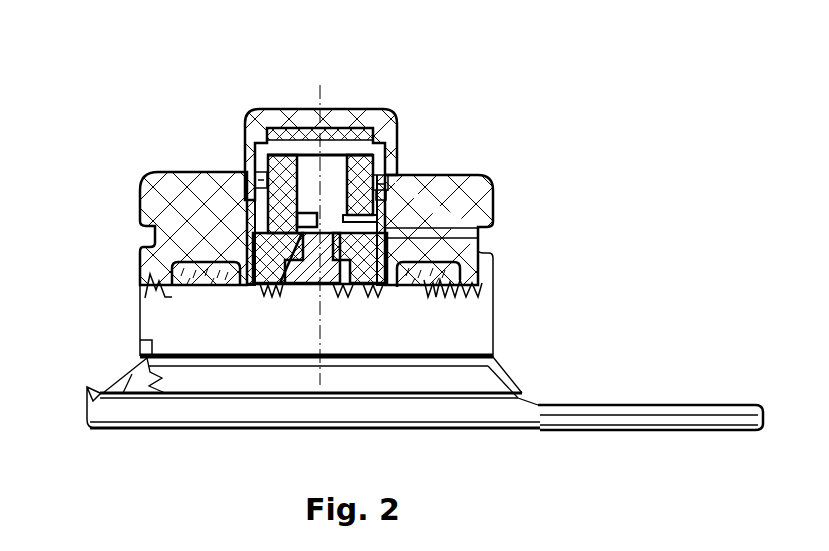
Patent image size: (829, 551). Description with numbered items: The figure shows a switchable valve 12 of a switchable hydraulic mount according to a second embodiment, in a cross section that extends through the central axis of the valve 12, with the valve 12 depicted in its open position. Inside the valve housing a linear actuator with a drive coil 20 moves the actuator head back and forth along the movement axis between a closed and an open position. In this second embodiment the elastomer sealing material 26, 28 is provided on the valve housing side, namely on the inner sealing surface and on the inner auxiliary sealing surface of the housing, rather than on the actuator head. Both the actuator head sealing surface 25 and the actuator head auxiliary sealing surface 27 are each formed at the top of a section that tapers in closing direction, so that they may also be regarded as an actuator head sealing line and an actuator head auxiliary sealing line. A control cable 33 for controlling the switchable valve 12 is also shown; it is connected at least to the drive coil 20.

The switchable valve 12 is at (122, 102).
The drive coil 20 is at (205, 268).
The actuator head sealing surface 25 is at (376, 144).
The elastomer sealing material 26 is at (332, 124).
The actuator head auxiliary sealing surface 27 is at (388, 190).
The elastomer sealing material 28 is at (387, 178).
The control cable 33 is at (650, 418).